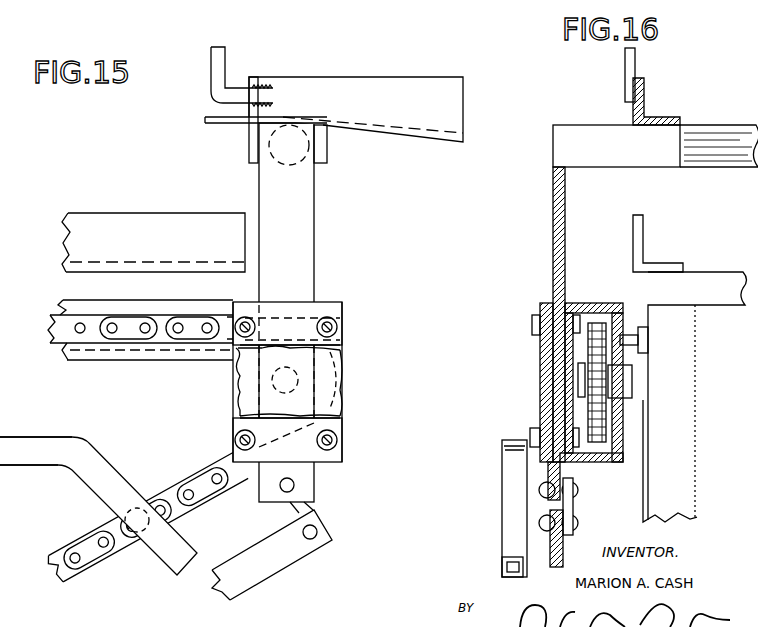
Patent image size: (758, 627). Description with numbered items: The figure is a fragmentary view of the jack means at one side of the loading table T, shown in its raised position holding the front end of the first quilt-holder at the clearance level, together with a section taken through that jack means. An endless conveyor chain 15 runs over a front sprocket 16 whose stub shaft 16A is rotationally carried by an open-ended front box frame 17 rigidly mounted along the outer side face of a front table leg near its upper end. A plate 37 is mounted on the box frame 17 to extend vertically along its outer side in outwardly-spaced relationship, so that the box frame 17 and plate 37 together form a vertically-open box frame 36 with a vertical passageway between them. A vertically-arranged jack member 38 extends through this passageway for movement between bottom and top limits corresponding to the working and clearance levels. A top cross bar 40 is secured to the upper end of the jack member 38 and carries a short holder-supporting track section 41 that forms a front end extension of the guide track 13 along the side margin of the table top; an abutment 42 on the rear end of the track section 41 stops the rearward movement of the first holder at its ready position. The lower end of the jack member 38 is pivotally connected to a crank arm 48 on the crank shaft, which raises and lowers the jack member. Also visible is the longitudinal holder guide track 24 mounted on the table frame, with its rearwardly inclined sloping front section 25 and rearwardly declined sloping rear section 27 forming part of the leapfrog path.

In FIG. 15, the guide track 13 is at (156, 245).
In FIG. 16, the guide track 13 is at (641, 223).
In FIG. 15, the endless conveyor chain 15 is at (50, 325).
In FIG. 15, the sprocket 16 is at (289, 603).
In FIG. 16, the stub shaft 16A is at (634, 384).
In FIG. 15, the front box frame 17 is at (343, 342).
In FIG. 16, the front box frame 17 is at (585, 303).
In FIG. 15, the track 24 is at (53, 470).
In FIG. 16, the track 24 is at (500, 468).
In FIG. 16, the sloping front section 25 is at (505, 532).
In FIG. 15, the sloping rear section 27 is at (115, 482).
In FIG. 16, the vertically-open box frame 36 is at (543, 300).
In FIG. 15, the plate 37 is at (236, 405).
In FIG. 16, the plate 37 is at (540, 358).
In FIG. 15, the jack member 38 is at (305, 222).
In FIG. 16, the jack member 38 is at (553, 212).
In FIG. 15, the top cross bar 40 is at (318, 158).
In FIG. 16, the top cross bar 40 is at (713, 160).
In FIG. 15, the short track section 41 is at (449, 92).
In FIG. 16, the short track section 41 is at (644, 97).
In FIG. 15, the abutment 42 is at (211, 65).
In FIG. 16, the abutment 42 is at (632, 62).
In FIG. 15, the crank arm 48 is at (305, 547).
In FIG. 16, the crank arm 48 is at (563, 547).
In FIG. 16, the loading table T is at (699, 352).